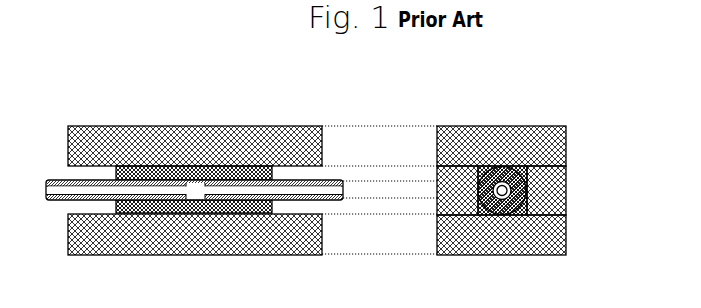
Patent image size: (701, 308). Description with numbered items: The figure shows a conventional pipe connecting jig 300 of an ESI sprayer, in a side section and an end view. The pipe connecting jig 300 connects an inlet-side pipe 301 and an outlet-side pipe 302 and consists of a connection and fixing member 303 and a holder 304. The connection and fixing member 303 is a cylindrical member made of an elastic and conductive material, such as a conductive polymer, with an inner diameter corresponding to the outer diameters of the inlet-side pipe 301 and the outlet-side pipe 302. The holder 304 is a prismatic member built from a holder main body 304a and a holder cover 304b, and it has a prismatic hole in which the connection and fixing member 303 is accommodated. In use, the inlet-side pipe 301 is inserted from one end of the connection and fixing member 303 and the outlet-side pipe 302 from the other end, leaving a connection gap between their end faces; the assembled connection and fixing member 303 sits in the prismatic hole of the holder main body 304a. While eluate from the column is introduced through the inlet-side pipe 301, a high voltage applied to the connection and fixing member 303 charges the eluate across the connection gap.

The pipe connecting jig 300 is at (319, 100).
The inlet-side pipe 301 is at (62, 181).
The outlet-side pipe 302 is at (323, 180).
The connection and fixing member 303 is at (278, 228).
The holder 304 is at (627, 146).
The holder main body 304a is at (215, 222).
The holder cover 304b is at (218, 126).